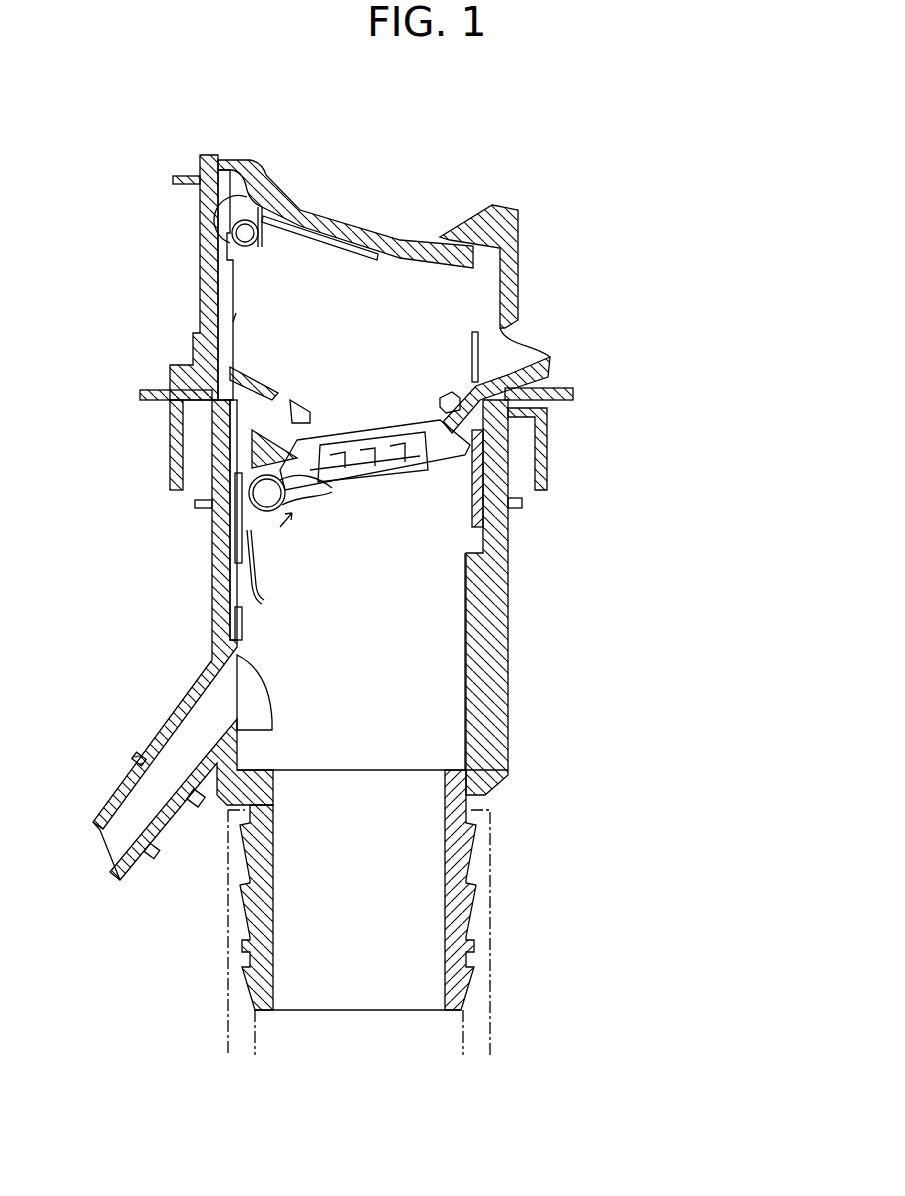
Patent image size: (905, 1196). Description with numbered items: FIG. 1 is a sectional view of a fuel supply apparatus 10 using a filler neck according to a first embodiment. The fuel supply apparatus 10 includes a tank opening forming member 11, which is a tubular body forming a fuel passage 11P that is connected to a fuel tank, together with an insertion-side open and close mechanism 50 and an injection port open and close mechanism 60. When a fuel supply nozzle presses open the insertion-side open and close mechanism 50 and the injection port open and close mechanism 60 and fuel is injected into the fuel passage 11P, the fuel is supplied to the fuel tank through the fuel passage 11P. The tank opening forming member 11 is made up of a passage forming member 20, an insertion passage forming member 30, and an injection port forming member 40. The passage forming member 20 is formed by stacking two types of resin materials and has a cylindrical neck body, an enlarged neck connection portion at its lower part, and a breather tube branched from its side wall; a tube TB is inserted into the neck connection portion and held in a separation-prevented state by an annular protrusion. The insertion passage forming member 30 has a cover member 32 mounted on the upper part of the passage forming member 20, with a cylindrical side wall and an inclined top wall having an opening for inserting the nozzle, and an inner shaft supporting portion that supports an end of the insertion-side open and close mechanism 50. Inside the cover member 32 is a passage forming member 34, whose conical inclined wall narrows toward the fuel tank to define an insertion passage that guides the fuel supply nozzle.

The fuel supply apparatus 10 is at (582, 158).
The tank opening forming member 11 is at (766, 306).
The passage forming member 20 is at (512, 688).
The insertion passage forming member 30 is at (689, 259).
The cover member 32 is at (518, 278).
The passage forming member 34 is at (550, 365).
The injection port forming member 40 is at (492, 457).
The insertion-side open and close mechanism 50 is at (347, 228).
The injection port open and close mechanism 60 is at (283, 533).
The fuel passage 11P is at (386, 651).
The tube TB is at (492, 913).